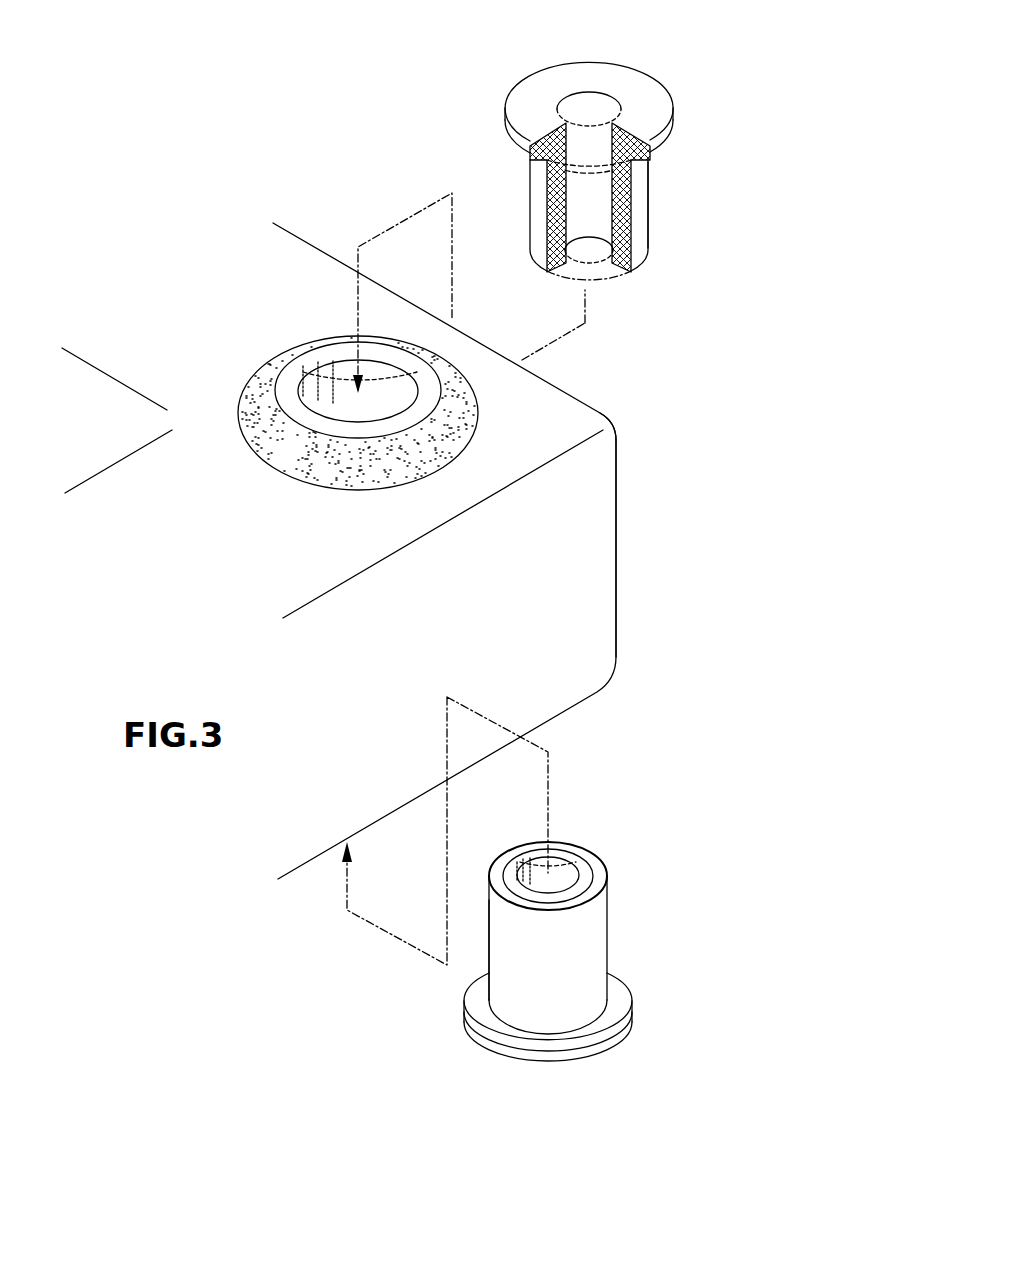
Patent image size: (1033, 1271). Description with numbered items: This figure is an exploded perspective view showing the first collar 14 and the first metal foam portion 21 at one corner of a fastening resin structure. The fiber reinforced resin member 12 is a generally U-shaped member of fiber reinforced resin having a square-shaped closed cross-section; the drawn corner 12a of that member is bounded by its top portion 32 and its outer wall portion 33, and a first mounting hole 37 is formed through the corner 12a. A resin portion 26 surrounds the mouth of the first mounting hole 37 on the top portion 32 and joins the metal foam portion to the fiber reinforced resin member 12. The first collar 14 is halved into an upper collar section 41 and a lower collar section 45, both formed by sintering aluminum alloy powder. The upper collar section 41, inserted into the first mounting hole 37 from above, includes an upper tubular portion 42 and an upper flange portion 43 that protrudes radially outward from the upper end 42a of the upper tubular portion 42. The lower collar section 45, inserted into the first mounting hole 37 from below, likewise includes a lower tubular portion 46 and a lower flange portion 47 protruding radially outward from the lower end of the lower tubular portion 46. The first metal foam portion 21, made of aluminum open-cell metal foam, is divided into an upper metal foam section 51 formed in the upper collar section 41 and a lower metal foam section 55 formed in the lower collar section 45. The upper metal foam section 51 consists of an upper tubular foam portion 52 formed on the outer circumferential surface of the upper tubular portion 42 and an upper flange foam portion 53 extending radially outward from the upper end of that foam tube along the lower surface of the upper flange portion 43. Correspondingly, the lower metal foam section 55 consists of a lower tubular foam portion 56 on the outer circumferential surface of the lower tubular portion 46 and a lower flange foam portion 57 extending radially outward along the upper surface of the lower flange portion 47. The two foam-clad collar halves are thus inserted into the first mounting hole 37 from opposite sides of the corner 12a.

The fiber reinforced resin member 12 is at (200, 292).
The corner 12a is at (517, 422).
The first collar 14 is at (526, 71).
The first metal foam portion 21 is at (655, 221).
The resin portion 26 is at (278, 445).
The top portion 32 is at (160, 352).
The outer wall portion 33 is at (567, 592).
The first mounting hole 37 is at (397, 373).
The upper collar section 41 is at (735, 95).
The upper tubular portion 42 is at (630, 193).
The upper end of the upper tubular portion 42a is at (605, 107).
The upper flange portion 43 is at (657, 110).
The lower collar section 45 is at (718, 857).
The lower tubular portion 46 is at (585, 873).
The lower flange portion 47 is at (620, 1045).
The upper metal foam section 51 is at (438, 97).
The upper tubular foam portion 52 is at (528, 225).
The upper flange foam portion 53 is at (528, 147).
The lower metal foam section 55 is at (386, 985).
The lower tubular foam portion 56 is at (500, 940).
The lower flange foam portion 57 is at (487, 1022).